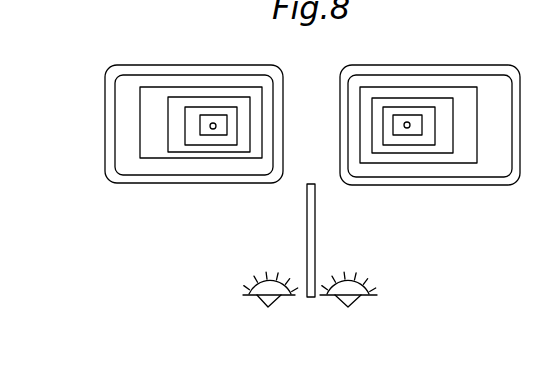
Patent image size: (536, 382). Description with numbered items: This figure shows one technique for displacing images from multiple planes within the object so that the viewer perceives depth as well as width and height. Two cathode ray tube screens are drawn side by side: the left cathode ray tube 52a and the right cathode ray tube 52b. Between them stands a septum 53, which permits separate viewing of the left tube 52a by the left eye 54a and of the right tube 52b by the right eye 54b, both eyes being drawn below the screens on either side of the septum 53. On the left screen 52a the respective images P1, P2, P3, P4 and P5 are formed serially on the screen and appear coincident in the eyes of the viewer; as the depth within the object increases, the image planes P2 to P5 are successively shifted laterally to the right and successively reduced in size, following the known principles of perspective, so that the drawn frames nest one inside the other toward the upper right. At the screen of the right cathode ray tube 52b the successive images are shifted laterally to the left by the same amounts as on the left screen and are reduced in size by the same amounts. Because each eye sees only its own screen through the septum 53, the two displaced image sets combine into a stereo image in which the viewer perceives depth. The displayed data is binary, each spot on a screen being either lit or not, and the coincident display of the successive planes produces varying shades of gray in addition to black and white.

The left cathode ray tube 52a is at (108, 77).
The right cathode ray tube 52b is at (467, 67).
The septum 53 is at (315, 212).
The left eye 54a is at (268, 307).
The right eye 54b is at (352, 303).
The image plane P1' P1 is at (116, 158).
The image plane P2' P2 is at (142, 156).
The image plane P3' P3 is at (168, 148).
The image plane P4' P4 is at (187, 139).
The image plane P5' P5 is at (201, 125).